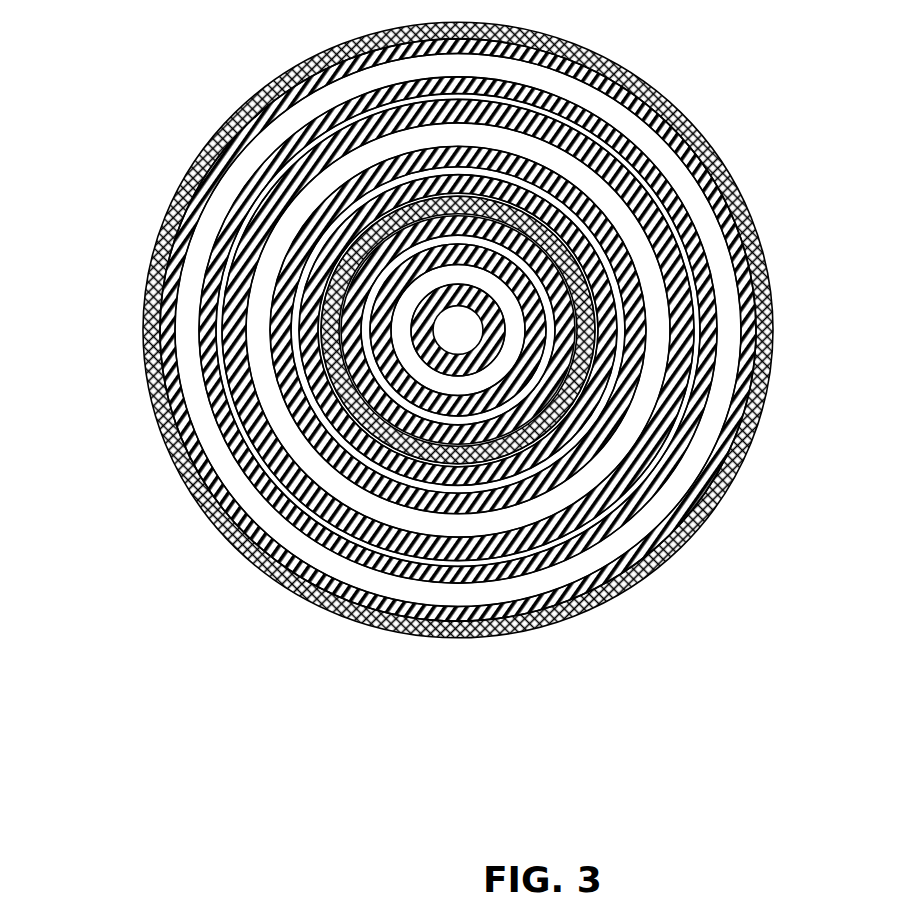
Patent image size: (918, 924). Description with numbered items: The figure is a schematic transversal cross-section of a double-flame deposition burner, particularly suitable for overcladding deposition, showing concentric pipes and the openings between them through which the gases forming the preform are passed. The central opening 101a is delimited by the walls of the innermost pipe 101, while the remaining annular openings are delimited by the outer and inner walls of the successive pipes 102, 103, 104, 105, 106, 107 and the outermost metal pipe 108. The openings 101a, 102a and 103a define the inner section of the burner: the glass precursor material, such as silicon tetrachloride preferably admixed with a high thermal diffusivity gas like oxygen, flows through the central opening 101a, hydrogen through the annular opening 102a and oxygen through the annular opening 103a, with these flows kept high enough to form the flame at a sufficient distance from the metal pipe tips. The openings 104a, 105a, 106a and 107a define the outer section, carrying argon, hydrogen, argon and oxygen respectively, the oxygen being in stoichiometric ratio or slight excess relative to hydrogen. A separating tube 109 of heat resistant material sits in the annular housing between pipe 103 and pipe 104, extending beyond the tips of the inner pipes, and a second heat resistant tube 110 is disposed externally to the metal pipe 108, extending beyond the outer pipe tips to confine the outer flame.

The pipe 101 is at (445, 335).
The central opening 101a is at (402, 362).
The pipe 102 is at (470, 415).
The annular opening 102a is at (335, 552).
The pipe 103 is at (515, 425).
The annular opening 103a is at (345, 452).
The pipe 104 is at (575, 430).
The opening 104a is at (322, 428).
The pipe 105 is at (647, 325).
The opening 105a is at (263, 383).
The pipe 106 is at (687, 278).
The opening 106a is at (222, 330).
The pipe 107 is at (682, 207).
The opening 107a is at (215, 208).
The metal pipe 108 is at (650, 107).
The separating tube 109 is at (545, 430).
The second tube 110 is at (628, 73).